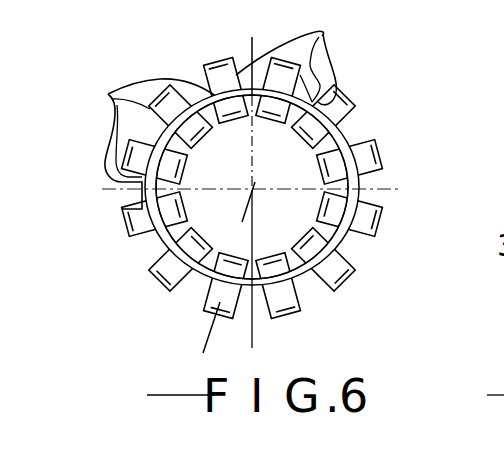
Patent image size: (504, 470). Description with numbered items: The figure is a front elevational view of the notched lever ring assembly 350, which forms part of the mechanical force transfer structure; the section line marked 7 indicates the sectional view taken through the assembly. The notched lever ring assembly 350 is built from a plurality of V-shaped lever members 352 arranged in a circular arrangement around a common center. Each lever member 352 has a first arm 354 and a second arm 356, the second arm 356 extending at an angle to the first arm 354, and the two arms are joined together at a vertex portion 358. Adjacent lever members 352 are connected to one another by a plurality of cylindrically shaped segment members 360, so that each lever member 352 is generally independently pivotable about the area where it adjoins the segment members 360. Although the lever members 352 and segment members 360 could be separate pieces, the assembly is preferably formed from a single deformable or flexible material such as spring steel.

The notched lever ring assembly 350 is at (308, 188).
The lever member 352 is at (323, 35).
The first arm 354 is at (340, 110).
The second arm 356 is at (358, 182).
The vertex portion 358 is at (343, 150).
The segment member 360 is at (108, 94).
The section line 7- 7 is at (253, 44).